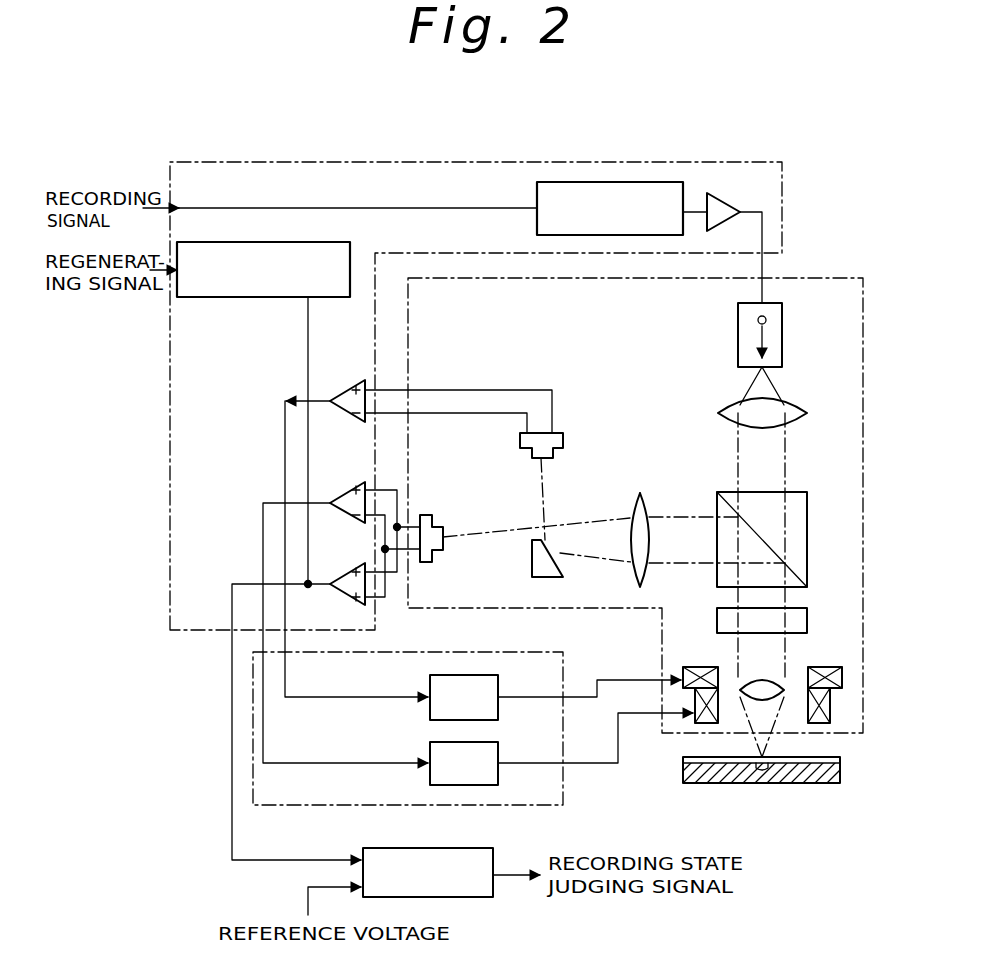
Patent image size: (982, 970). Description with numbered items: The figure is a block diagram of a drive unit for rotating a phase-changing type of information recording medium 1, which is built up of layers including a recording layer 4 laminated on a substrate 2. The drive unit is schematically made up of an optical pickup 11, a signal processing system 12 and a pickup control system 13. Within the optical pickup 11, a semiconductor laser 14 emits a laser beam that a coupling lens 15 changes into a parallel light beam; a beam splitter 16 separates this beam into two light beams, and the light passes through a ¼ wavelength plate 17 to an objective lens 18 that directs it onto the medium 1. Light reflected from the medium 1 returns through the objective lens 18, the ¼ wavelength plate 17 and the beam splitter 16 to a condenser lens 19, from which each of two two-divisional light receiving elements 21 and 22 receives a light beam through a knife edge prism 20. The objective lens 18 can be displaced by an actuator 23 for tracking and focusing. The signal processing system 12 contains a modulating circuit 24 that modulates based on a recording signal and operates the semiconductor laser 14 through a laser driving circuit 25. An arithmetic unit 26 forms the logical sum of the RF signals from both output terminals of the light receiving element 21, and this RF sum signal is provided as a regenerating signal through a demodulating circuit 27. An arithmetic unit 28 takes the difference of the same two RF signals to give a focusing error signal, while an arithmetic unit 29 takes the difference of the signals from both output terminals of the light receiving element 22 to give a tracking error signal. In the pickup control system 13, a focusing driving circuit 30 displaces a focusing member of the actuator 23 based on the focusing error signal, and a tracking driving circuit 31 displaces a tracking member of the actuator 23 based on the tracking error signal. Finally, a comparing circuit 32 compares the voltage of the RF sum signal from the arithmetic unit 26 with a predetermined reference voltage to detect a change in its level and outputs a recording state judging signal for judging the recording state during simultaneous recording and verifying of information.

The phase-changing type of information recording medium 1 is at (815, 785).
The substrate 2 is at (766, 785).
The recording layer 4 is at (718, 785).
The optical pickup 11 is at (820, 278).
The signal processing system 12 is at (330, 162).
The pickup control system 13 is at (563, 797).
The semiconductor laser 14 is at (738, 325).
The coupling lens 15 is at (732, 400).
The beam splitter 16 is at (718, 500).
The ¼ wavelength plate 17 is at (717, 615).
The objective lens 18 is at (748, 680).
The condenser lens 19 is at (633, 494).
The knife edge prism 20 is at (532, 570).
The two-divisional light receiving element 21 is at (430, 515).
The two-divisional light receiving element 22 is at (561, 434).
The actuator 23 is at (838, 688).
The modulating circuit 24 is at (607, 182).
The laser driving circuit 25 is at (714, 195).
The arithmetic unit 26 is at (350, 572).
The demodulating circuit 27 is at (262, 297).
The arithmetic unit 28 is at (350, 490).
The arithmetic unit 29 is at (350, 390).
The focusing driving circuit 30 is at (430, 748).
The tracking driving circuit 31 is at (430, 680).
The comparing circuit 32 is at (493, 893).